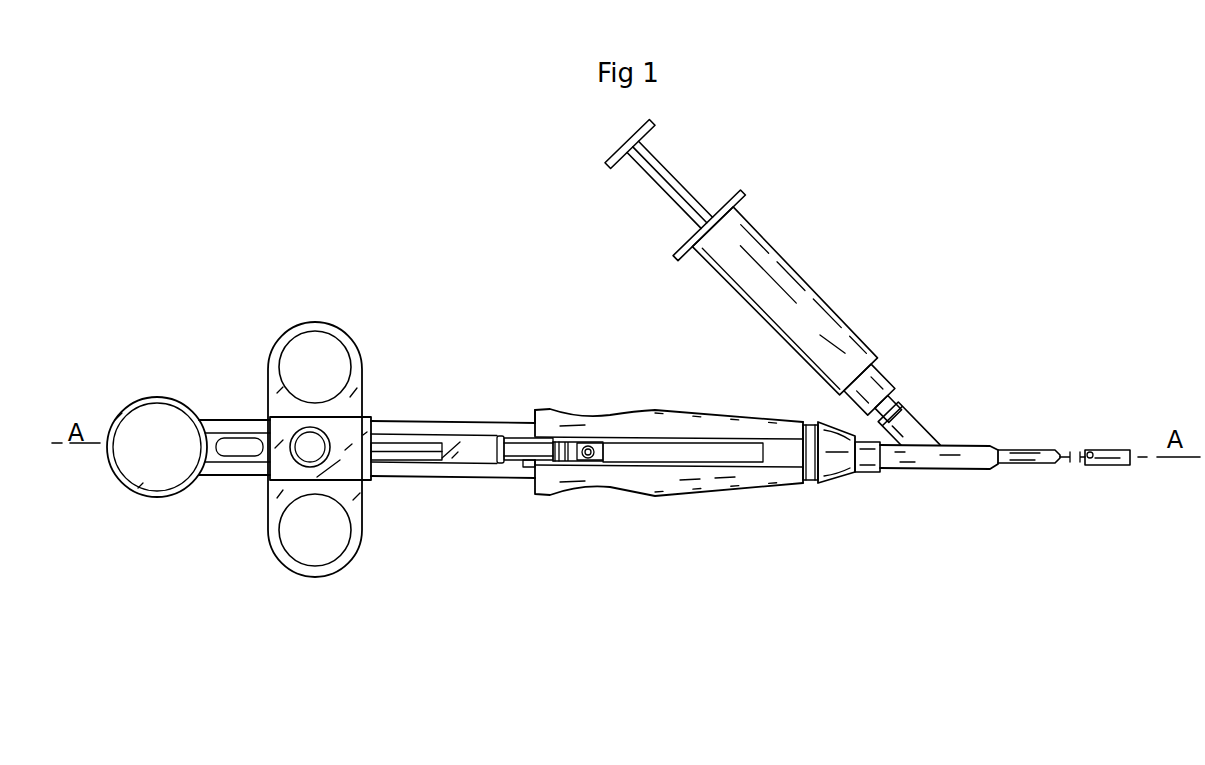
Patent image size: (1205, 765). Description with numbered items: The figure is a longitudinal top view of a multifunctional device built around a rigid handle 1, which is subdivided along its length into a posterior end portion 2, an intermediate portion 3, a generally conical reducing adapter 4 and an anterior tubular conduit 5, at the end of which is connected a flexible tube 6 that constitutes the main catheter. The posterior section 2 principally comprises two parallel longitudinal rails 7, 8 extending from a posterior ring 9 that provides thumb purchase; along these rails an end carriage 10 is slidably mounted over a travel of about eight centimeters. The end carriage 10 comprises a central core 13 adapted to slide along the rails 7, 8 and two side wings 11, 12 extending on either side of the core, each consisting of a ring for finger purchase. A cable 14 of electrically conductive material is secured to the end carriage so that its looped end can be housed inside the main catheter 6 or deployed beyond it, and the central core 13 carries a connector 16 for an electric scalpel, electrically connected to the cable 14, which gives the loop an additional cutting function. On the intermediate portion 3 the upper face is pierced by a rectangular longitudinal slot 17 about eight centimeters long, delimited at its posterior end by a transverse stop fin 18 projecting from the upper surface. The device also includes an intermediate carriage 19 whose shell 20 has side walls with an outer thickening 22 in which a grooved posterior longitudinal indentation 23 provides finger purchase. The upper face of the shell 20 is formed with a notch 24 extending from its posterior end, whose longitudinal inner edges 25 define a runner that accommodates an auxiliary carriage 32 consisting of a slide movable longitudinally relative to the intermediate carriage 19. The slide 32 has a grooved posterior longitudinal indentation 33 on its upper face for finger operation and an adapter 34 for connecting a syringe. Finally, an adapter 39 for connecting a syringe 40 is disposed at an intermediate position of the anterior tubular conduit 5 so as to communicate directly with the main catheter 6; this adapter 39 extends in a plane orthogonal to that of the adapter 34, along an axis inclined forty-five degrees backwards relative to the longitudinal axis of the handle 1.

The rigid handle 1 is at (481, 545).
The posterior end portion 2 is at (240, 482).
The intermediate portion 3 is at (523, 417).
The reducing adapter 4 is at (853, 482).
The anterior tubular conduit 5 is at (942, 473).
The flexible tube 6 is at (1028, 466).
The longitudinal rail 7 is at (409, 428).
The longitudinal rail 8 is at (397, 481).
The posterior ring 9 is at (165, 500).
The end carriage 10 is at (317, 585).
The side wing 11 is at (338, 352).
The side wing 12 is at (282, 560).
The central core 13 is at (357, 472).
The cable 14 is at (426, 462).
The connector 16 is at (302, 440).
The longitudinal slot 17 is at (524, 464).
The transverse stop fin 18 is at (497, 438).
The intermediate carriage 19 is at (693, 502).
The shell 20 is at (788, 482).
The thickening 22 is at (648, 495).
The posterior longitudinal indentation 23 is at (590, 492).
The notch 24 is at (702, 452).
The longitudinal inner edges 25 is at (738, 467).
The auxiliary carriage 32 is at (582, 445).
The posterior longitudinal indentation 33 is at (565, 443).
The adapter 34 is at (592, 447).
The adapter 39 is at (913, 428).
The syringe 40 is at (778, 282).